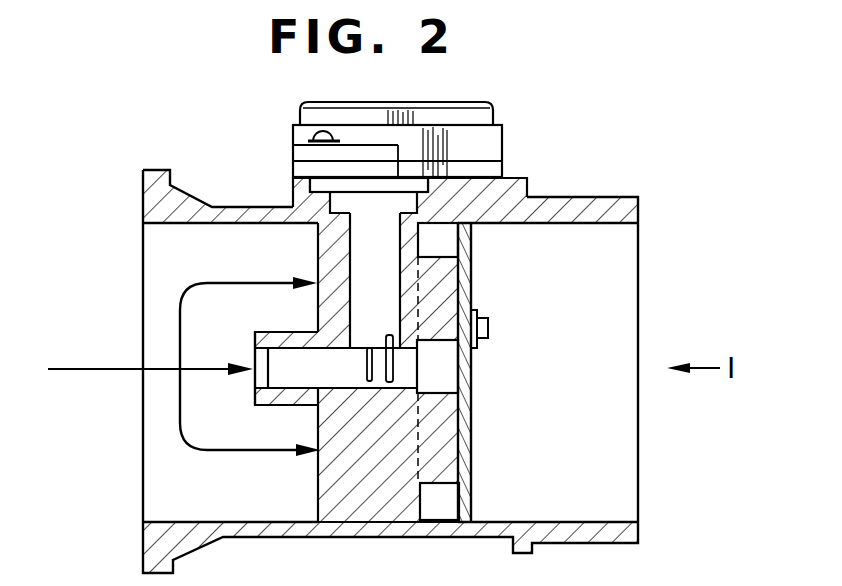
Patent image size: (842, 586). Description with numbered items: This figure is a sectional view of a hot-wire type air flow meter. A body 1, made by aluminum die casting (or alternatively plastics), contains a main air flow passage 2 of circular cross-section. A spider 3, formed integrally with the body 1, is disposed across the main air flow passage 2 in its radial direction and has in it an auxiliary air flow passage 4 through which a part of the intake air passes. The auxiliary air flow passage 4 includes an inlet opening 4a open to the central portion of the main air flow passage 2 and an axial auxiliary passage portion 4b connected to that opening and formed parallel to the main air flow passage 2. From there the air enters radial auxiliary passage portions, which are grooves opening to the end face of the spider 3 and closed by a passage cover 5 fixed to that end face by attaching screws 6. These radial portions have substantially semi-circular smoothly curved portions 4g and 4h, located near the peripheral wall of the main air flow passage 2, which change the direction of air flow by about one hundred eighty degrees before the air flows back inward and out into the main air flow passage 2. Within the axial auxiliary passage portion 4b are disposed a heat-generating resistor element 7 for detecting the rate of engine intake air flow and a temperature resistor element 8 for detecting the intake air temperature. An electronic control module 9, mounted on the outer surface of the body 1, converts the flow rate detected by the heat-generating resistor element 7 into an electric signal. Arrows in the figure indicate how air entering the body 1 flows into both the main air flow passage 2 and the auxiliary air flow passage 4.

The body 1 is at (602, 197).
The main air flow passage 2 is at (167, 242).
The spider 3 is at (373, 483).
The auxiliary air flow passage 4 is at (295, 372).
The inlet opening 4a is at (262, 353).
The axial auxiliary passage portion 4b is at (322, 367).
The curved portion 4g is at (443, 497).
The curved portion 4h is at (447, 237).
The passage cover 5 is at (473, 278).
The attaching screw 6 is at (488, 322).
The heat-generating resistor element 7 is at (363, 352).
The temperature resistor element 8 is at (417, 369).
The electronic control module 9 is at (483, 143).